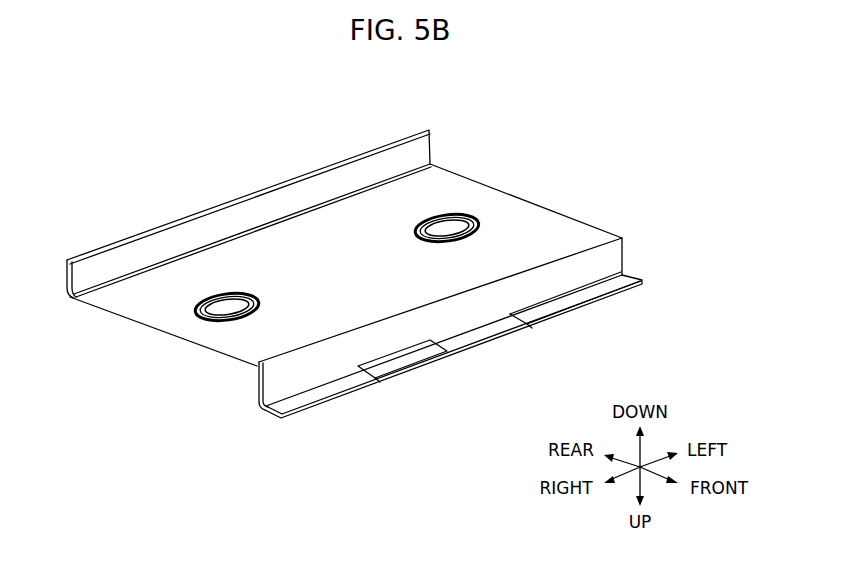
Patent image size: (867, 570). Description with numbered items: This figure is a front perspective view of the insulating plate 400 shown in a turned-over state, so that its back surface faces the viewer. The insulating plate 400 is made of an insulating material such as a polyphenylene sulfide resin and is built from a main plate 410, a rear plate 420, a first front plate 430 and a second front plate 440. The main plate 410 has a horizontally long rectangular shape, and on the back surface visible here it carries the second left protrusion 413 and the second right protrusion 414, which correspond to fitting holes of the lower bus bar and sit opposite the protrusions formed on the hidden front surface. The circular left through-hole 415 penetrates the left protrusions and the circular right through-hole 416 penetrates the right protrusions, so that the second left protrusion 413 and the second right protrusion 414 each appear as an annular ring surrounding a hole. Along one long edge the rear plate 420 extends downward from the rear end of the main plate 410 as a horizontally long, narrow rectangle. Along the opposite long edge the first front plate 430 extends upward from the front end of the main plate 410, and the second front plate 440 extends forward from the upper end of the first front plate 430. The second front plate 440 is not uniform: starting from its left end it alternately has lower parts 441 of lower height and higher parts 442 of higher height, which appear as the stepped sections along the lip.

The insulating plate 400 is at (254, 170).
The main plate 410 is at (370, 227).
The second left protrusion 413 is at (442, 217).
The second right protrusion 414 is at (225, 295).
The circular left through-hole 415 is at (450, 233).
The circular right through-hole 416 is at (232, 305).
The rear plate 420 is at (93, 273).
The first front plate 430 is at (607, 265).
The second front plate 440 is at (268, 417).
The lower parts 441 is at (413, 370).
The higher parts 442 is at (332, 403).